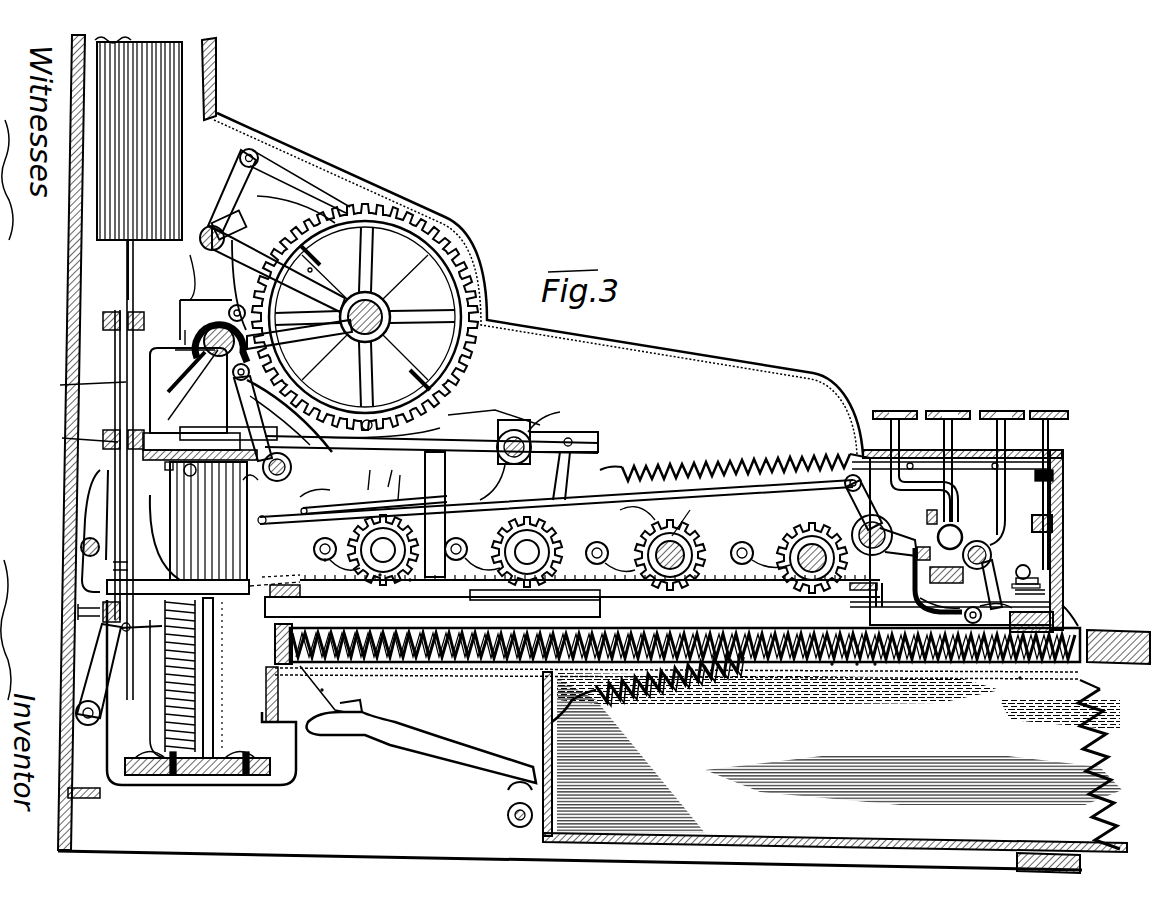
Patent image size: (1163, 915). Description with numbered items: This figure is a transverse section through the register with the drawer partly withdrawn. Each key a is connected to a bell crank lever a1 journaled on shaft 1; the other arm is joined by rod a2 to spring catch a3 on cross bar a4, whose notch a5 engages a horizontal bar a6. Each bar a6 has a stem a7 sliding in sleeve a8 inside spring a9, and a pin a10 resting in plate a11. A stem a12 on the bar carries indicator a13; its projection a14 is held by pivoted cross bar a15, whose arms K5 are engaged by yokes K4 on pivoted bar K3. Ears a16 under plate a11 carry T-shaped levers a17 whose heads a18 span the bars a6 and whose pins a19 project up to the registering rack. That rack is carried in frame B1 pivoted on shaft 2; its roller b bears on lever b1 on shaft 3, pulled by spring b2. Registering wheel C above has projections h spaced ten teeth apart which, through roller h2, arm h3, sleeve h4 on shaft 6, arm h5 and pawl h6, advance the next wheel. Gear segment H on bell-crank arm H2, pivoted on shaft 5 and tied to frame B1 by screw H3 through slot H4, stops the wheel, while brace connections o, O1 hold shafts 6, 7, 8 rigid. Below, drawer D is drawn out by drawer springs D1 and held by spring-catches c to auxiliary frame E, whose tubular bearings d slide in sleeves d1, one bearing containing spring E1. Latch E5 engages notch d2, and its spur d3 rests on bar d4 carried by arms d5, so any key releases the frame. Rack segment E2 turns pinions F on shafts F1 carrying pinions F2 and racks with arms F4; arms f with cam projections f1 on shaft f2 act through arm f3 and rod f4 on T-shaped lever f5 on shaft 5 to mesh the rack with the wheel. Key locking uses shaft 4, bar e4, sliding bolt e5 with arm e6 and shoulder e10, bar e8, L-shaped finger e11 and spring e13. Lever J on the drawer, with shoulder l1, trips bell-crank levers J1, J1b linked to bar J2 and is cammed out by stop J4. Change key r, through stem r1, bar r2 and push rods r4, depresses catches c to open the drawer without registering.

The indicator a13 is at (130, 202).
The bell-crank lever J1 is at (160, 420).
The indicator stem a12 is at (75, 383).
The pin a19 is at (74, 435).
The arm h5 is at (228, 195).
The pivoted pawl h6 is at (302, 183).
The frame shaft 6 is at (200, 245).
The sleeve h4 is at (205, 250).
The projecting arm h3 is at (208, 272).
The friction roller h2 is at (240, 305).
The registering wheel C is at (365, 317).
The shaft 8 is at (380, 308).
The engaging projections h is at (336, 345).
The brace connection o is at (310, 270).
The brace connection O1 is at (312, 335).
The shaft 7 is at (198, 379).
The projecting ears a16 is at (182, 345).
The horizontal plate a11 is at (198, 450).
The gear segment H is at (252, 412).
The frame shaft 5 is at (277, 455).
The bell-crank arm H2 is at (289, 416).
The screw H3 is at (420, 418).
The slotted opening H4 is at (485, 405).
The rack frame B1 is at (431, 506).
The shaft 2 is at (514, 440).
The projecting roller b is at (568, 430).
The pivoted lever b1 is at (570, 460).
The beveled stop projection J4 is at (512, 480).
The spring b2 is at (715, 468).
The rod a2 is at (745, 490).
The extending arm f3 is at (476, 494).
The T-shaped oscillating lever f5 is at (296, 491).
The connecting rod f4 is at (380, 470).
The projecting arm F4 is at (393, 482).
The transverse bar J2 is at (246, 486).
The pinion F is at (795, 540).
The shaft F1 is at (812, 540).
The shaft 3 is at (637, 519).
The pivoted arm f is at (552, 577).
The shaft f2 is at (746, 568).
The cam projection f1 is at (822, 575).
The pinion F2 is at (690, 575).
The sleeve d1 is at (452, 688).
The rack segment E2 is at (535, 603).
The spring catch a3 is at (285, 573).
The engaging notch a5 is at (275, 575).
The projecting pin a10 is at (185, 538).
The T-shaped lever a17 is at (165, 466).
The transverse head a18 is at (185, 478).
The pivoted cross bar a15 is at (100, 478).
The projection a14 is at (113, 566).
The projecting arm K5 is at (92, 592).
The yoke K4 is at (103, 612).
The pivoted bar K3 is at (108, 628).
The horizontal bar a6 is at (178, 587).
The spring a9 is at (170, 655).
The stem a7 is at (212, 720).
The sleeve a8 is at (190, 760).
The cross bar a4 is at (280, 712).
The bell-crank lever J1b is at (322, 690).
The shoulder l1 is at (350, 710).
The lever J is at (465, 760).
The spring E1 is at (500, 665).
The notch d2 is at (1120, 640).
The drawer D is at (835, 762).
The drawer spring D1 is at (668, 695).
The auxiliary sliding frame E is at (1128, 680).
The tubular bearing d is at (832, 664).
The arm d5 is at (857, 664).
The shaft 1 is at (875, 664).
The push rod r4 is at (1020, 678).
The bell crank lever a1 is at (881, 517).
The key a is at (940, 396).
The transverse bar d4 is at (862, 460).
The drawer opening key r is at (1068, 415).
The stem r1 is at (1053, 482).
The horizontal bar r2 is at (1060, 522).
The spring e13 is at (985, 545).
The spring-catch c is at (962, 528).
The transverse shaft 4 is at (995, 560).
The transverse bar e4 is at (1026, 563).
The projecting arm e6 is at (1035, 590).
The sliding bar e8 is at (1050, 598).
The pivoted latch E5 is at (1060, 598).
The spur d3 is at (906, 577).
The sliding bolt e5 is at (924, 585).
The engaging shoulder e10 is at (940, 606).
The L-shaped finger e11 is at (1083, 620).